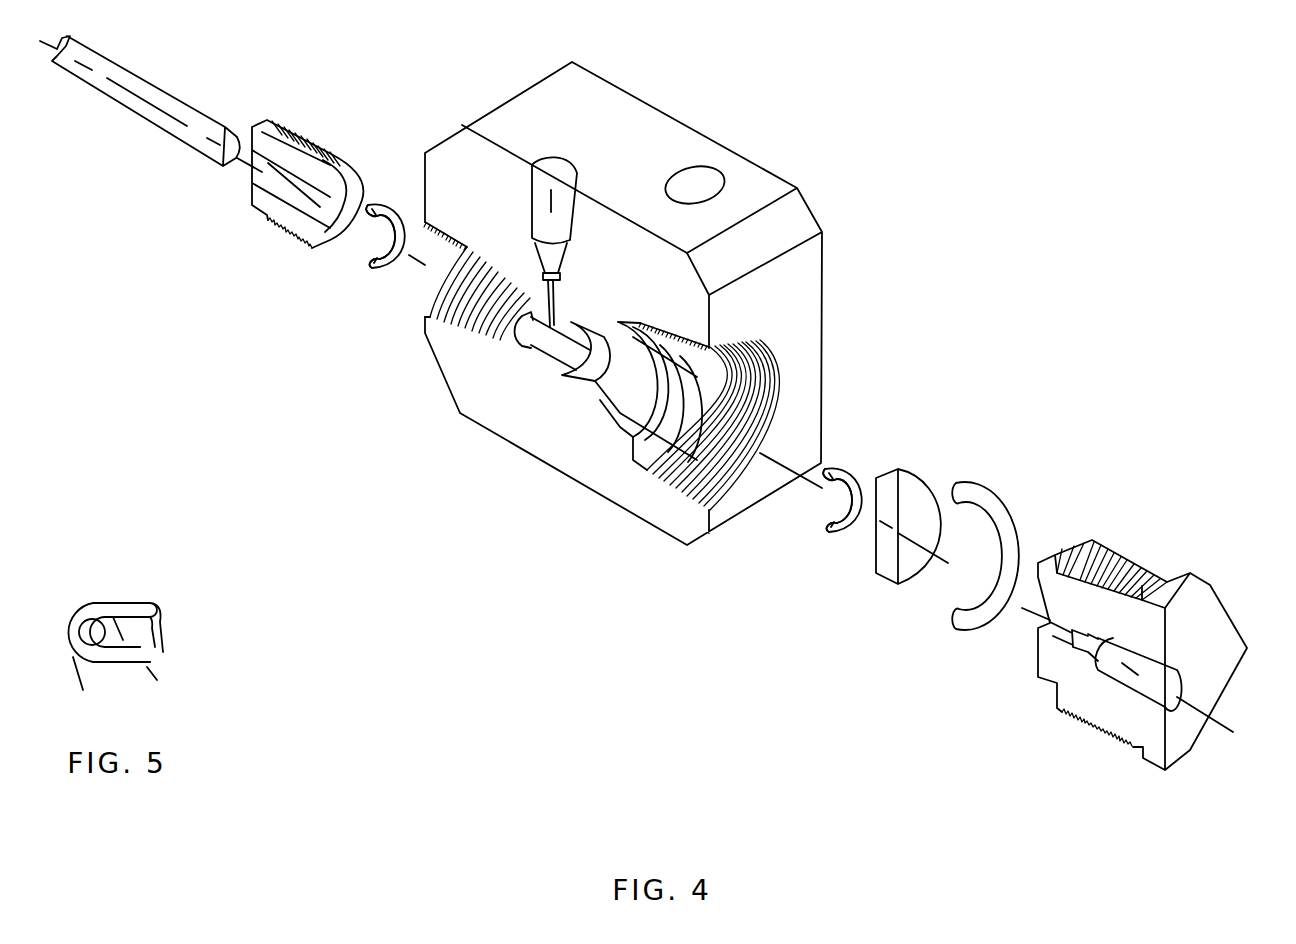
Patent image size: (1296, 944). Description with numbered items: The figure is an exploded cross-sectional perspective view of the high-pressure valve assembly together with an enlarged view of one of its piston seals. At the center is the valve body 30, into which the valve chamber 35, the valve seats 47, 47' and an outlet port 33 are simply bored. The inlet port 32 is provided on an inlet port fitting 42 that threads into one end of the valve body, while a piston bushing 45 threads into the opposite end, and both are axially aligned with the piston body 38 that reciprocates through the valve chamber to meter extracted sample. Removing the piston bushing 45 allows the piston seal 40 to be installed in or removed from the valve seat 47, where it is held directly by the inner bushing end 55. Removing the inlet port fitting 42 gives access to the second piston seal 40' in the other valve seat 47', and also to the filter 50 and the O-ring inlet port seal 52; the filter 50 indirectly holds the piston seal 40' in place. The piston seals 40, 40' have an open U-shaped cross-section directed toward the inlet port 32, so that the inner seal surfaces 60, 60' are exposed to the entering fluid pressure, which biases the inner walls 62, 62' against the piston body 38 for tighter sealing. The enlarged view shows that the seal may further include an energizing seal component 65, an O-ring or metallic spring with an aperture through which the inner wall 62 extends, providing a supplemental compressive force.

In FIG. 4, the valve body 30 is at (690, 143).
In FIG. 4, the inlet port 32 is at (1153, 683).
In FIG. 4, the outlet port 33 is at (543, 167).
In FIG. 4, the valve chamber 35 is at (564, 377).
In FIG. 4, the piston body 38 is at (150, 126).
In FIG. 4, the piston seal 40 is at (384, 194).
In FIG. 4, the piston seal 40' is at (857, 449).
In FIG. 4, the inlet port fitting 42 is at (1183, 748).
In FIG. 4, the piston bushing 45 is at (270, 220).
In FIG. 4, the valve seat 47 is at (514, 368).
In FIG. 4, the valve seat 47' is at (586, 388).
In FIG. 4, the filter 50 is at (889, 573).
In FIG. 4, the O-ring inlet port seal 52 is at (950, 634).
In FIG. 4, the inner bushing end 55 is at (340, 248).
In FIG. 4, the inner seal surface 60 is at (372, 285).
In FIG. 5, the inner seal surface 60 is at (155, 646).
In FIG. 4, the inner seal surface 60' is at (830, 539).
In FIG. 4, the inner wall 62 is at (340, 268).
In FIG. 5, the inner wall 62 is at (126, 690).
In FIG. 4, the inner wall 62' is at (790, 525).
In FIG. 5, the energizing seal component 65 is at (92, 628).